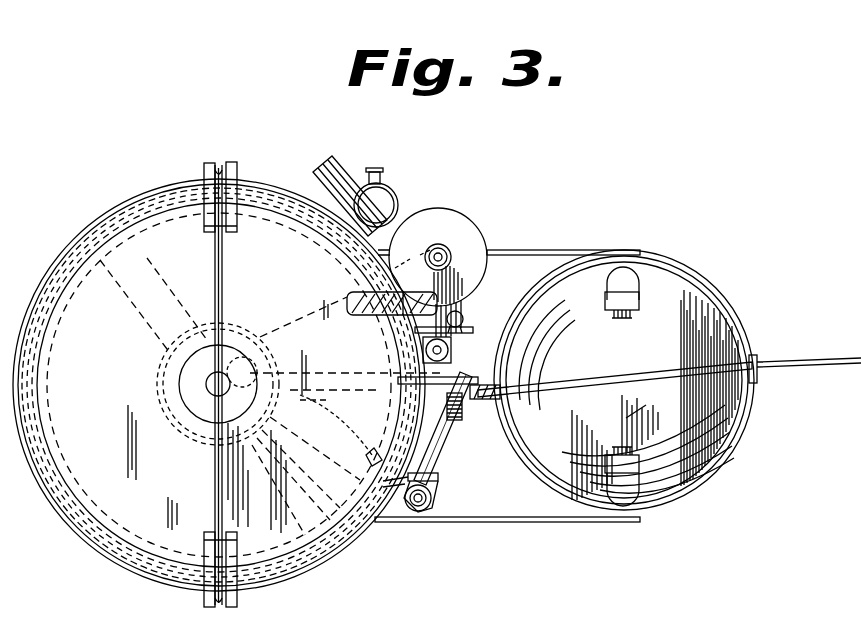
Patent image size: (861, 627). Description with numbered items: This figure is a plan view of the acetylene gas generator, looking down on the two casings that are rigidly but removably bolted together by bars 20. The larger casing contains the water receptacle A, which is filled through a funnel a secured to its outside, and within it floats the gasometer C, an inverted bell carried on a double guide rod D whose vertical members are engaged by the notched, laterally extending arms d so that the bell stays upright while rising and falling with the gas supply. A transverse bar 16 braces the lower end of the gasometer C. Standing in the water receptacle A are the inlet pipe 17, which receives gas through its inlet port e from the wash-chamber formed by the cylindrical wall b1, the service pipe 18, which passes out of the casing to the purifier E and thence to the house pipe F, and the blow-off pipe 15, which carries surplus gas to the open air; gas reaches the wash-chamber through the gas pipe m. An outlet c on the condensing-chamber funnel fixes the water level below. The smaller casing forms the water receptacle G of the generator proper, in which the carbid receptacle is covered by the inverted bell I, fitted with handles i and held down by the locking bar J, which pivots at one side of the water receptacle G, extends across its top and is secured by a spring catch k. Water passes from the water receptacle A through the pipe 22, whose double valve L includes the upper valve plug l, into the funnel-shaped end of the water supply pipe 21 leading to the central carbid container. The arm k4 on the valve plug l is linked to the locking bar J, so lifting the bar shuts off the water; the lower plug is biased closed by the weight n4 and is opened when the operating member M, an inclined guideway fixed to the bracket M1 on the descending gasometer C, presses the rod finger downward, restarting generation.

The water receptacle A is at (100, 218).
The gasometer C is at (219, 385).
The double guide rod D is at (222, 300).
The laterally extending arms d is at (206, 175).
The inlet pipe 17 is at (190, 396).
The transverse bar 16 is at (153, 305).
The blow-off pipe 15 is at (325, 440).
The service pipe 18 is at (292, 330).
The double valve L is at (430, 364).
The pipe 22 is at (360, 376).
The gas pipe m is at (322, 402).
The inlet port e is at (372, 422).
The bracket M1 is at (362, 300).
The operating member M is at (425, 333).
The water supply pipe 21 is at (485, 350).
The funnel a is at (318, 173).
The cylindrical wall b1 is at (395, 198).
The outlet c is at (375, 168).
The purifier E is at (462, 228).
The house pipe F is at (437, 245).
The bars 20 is at (545, 252).
The weight n4 is at (462, 412).
The arm k4 is at (462, 378).
The locking bar J is at (640, 380).
The spring catch k is at (757, 380).
The water receptacle G is at (718, 296).
The handles i is at (640, 288).
The valve plug l is at (606, 493).
The inverted bell I is at (635, 421).